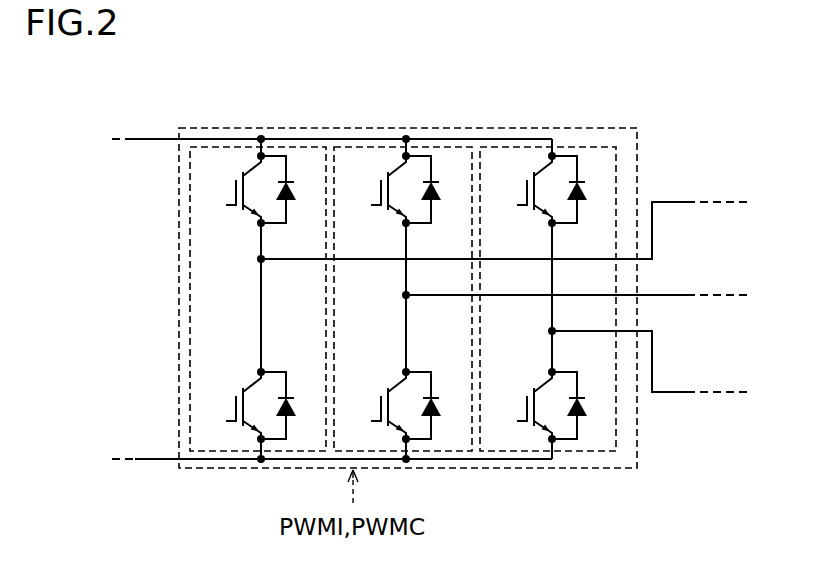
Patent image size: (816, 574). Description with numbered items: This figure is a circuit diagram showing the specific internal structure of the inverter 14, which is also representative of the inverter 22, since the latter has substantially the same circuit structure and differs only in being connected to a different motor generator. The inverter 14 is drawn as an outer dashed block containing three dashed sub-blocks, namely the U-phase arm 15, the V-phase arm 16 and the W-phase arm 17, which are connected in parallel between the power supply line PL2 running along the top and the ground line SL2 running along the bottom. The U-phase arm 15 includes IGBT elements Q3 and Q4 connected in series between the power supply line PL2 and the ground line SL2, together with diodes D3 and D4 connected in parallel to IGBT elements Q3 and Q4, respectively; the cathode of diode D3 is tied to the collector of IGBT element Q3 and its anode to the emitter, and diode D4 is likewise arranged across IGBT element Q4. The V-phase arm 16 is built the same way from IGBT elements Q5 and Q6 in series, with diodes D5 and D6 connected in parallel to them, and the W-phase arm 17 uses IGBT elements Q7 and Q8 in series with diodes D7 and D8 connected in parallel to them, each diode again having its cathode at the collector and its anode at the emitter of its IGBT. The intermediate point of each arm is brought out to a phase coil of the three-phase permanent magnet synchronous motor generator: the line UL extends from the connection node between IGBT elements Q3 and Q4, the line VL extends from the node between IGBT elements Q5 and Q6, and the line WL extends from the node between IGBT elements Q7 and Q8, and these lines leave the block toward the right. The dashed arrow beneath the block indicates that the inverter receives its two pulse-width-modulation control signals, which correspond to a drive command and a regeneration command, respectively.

The inverter 14 is at (405, 260).
The inverter 22 is at (628, 123).
The U-phase arm 15 is at (299, 145).
The V-phase arm 16 is at (445, 145).
The W-phase arm 17 is at (588, 146).
The power supply line PL2 is at (152, 137).
The ground line SL2 is at (155, 457).
The line UL is at (677, 200).
The line VL is at (677, 293).
The line WL is at (677, 390).
The IGBT element Q3 is at (230, 189).
The IGBT element Q4 is at (230, 405).
The IGBT element Q5 is at (375, 189).
The IGBT element Q6 is at (375, 405).
The IGBT element Q7 is at (521, 189).
The IGBT element Q8 is at (521, 405).
The diode D3 is at (292, 194).
The diode D4 is at (292, 410).
The diode D5 is at (437, 194).
The diode D6 is at (437, 410).
The diode D7 is at (583, 194).
The diode D8 is at (583, 410).